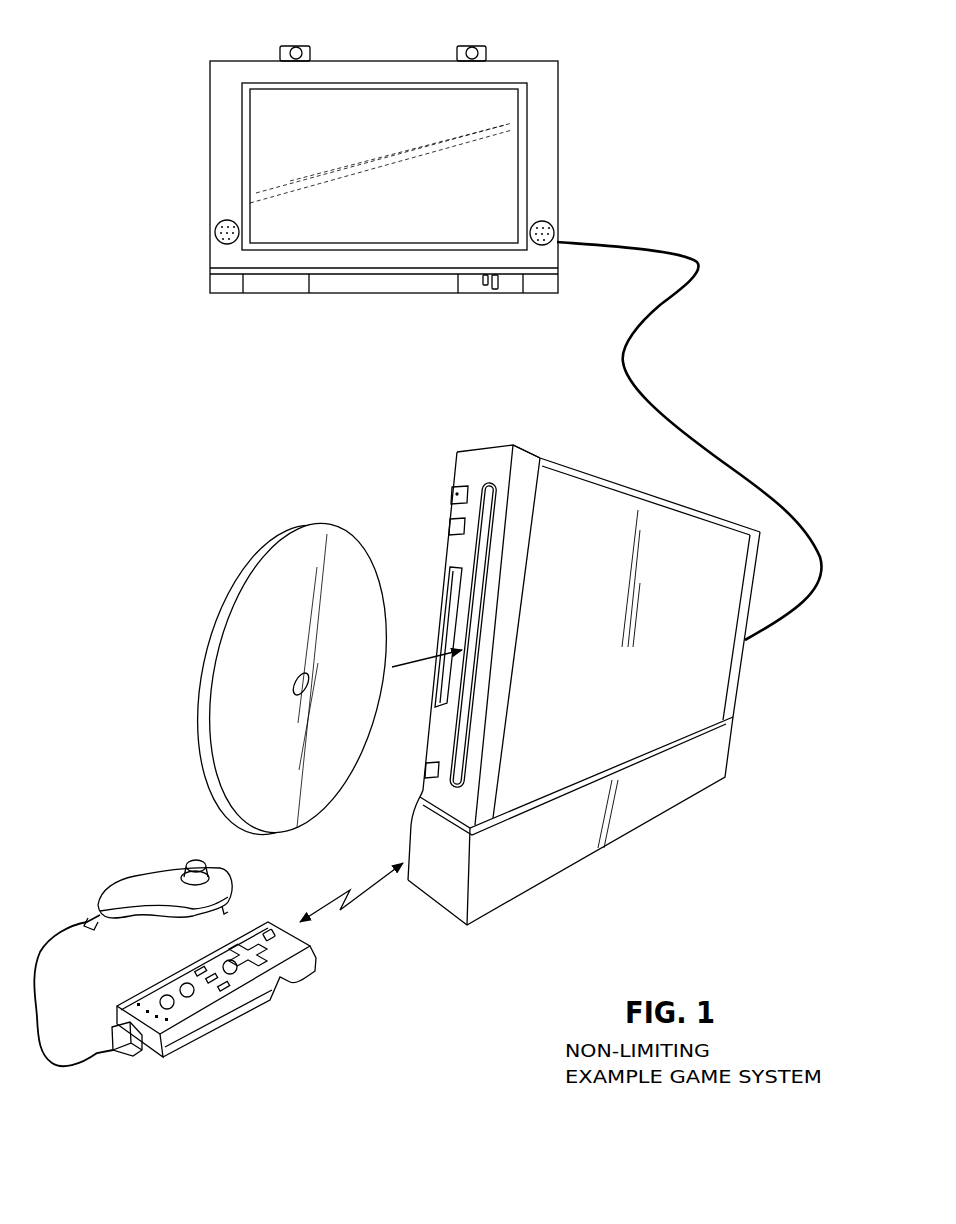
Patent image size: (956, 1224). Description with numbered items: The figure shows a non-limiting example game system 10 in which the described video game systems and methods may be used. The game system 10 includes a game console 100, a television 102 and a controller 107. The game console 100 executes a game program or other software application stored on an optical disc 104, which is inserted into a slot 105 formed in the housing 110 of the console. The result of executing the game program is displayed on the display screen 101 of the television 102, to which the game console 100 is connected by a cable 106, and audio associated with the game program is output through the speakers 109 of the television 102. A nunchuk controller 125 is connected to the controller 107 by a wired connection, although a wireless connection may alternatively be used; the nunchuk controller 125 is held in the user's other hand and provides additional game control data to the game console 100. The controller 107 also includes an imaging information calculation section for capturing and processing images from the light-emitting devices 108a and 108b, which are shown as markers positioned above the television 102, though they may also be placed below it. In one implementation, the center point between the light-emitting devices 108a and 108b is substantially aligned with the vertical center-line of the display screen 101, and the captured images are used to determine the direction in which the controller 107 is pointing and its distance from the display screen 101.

The game system 10 is at (266, 410).
The game console 100 is at (755, 680).
The display screen 101 is at (280, 130).
The television 102 is at (576, 143).
The optical disc 104 is at (207, 778).
The slot 105 is at (481, 490).
The cable 106 is at (668, 425).
The controller 107 is at (333, 958).
The light-emitting device 108a is at (310, 52).
The light-emitting device 108b is at (486, 52).
The speakers 109 is at (215, 240).
The housing 110 is at (599, 476).
The nunchuk controller 125 is at (137, 892).